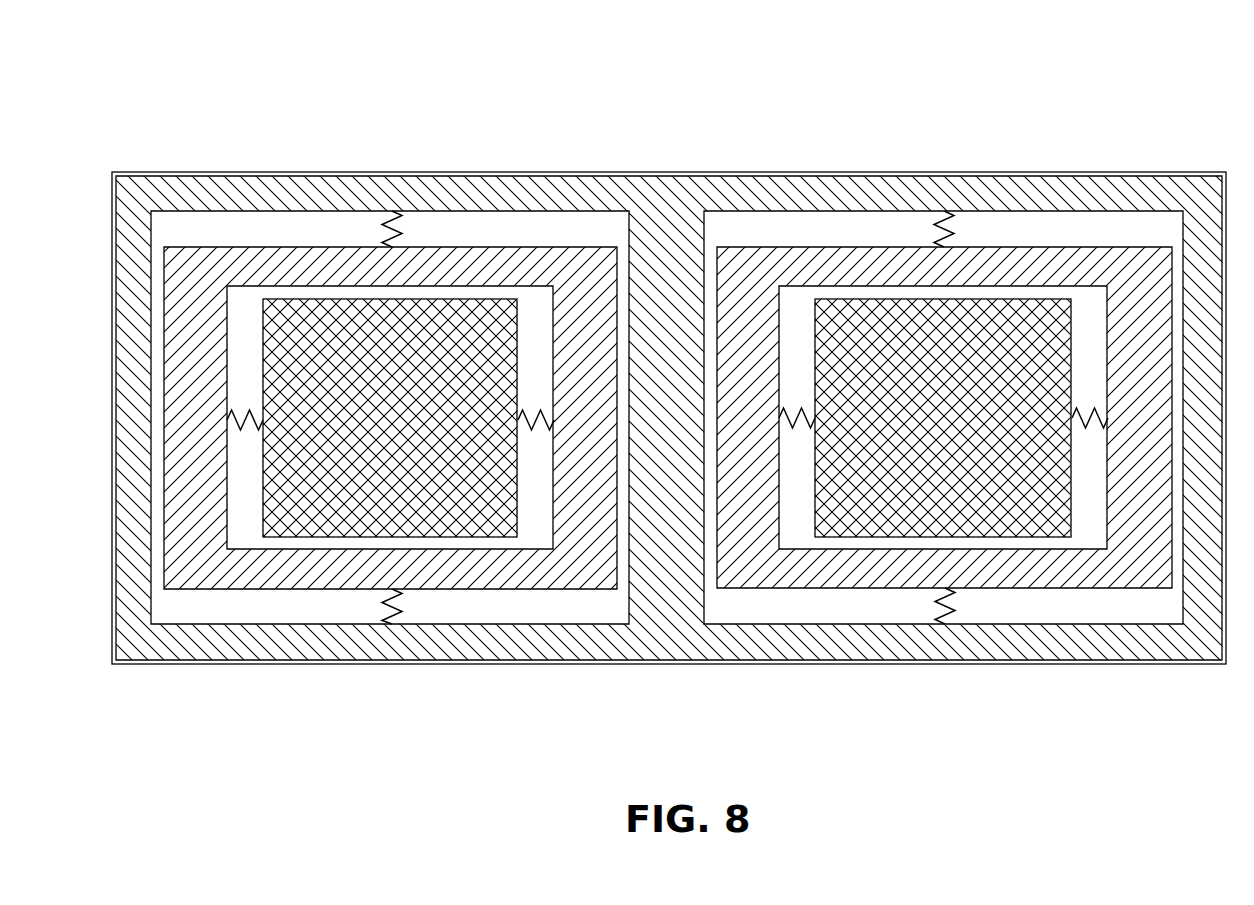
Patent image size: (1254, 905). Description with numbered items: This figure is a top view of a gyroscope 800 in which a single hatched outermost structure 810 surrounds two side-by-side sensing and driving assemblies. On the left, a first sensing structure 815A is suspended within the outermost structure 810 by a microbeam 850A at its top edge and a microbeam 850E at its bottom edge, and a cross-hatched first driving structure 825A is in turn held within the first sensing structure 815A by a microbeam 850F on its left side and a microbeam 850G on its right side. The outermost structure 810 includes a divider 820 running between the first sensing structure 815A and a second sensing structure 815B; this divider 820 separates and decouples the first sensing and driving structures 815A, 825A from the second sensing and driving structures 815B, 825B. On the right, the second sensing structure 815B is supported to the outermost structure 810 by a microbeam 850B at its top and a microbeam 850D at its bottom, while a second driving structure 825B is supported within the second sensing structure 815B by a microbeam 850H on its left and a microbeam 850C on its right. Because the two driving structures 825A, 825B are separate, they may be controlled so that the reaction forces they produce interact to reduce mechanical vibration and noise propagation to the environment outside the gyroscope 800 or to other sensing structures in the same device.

The gyroscope 800 is at (134, 82).
The outermost structure 810 is at (650, 184).
The first sensing structure 815A is at (390, 418).
The second sensing structure 815B is at (944, 417).
The divider 820 is at (666, 417).
The first driving structure 825A is at (390, 418).
The second driving structure 825B is at (943, 418).
The microbeam 850A is at (389, 211).
The microbeam 850B is at (943, 211).
The microbeam 850C is at (1071, 411).
The microbeam 850D is at (942, 625).
The microbeam 850E is at (392, 625).
The microbeam 850F is at (265, 413).
The microbeam 850G is at (517, 420).
The microbeam 850H is at (818, 410).